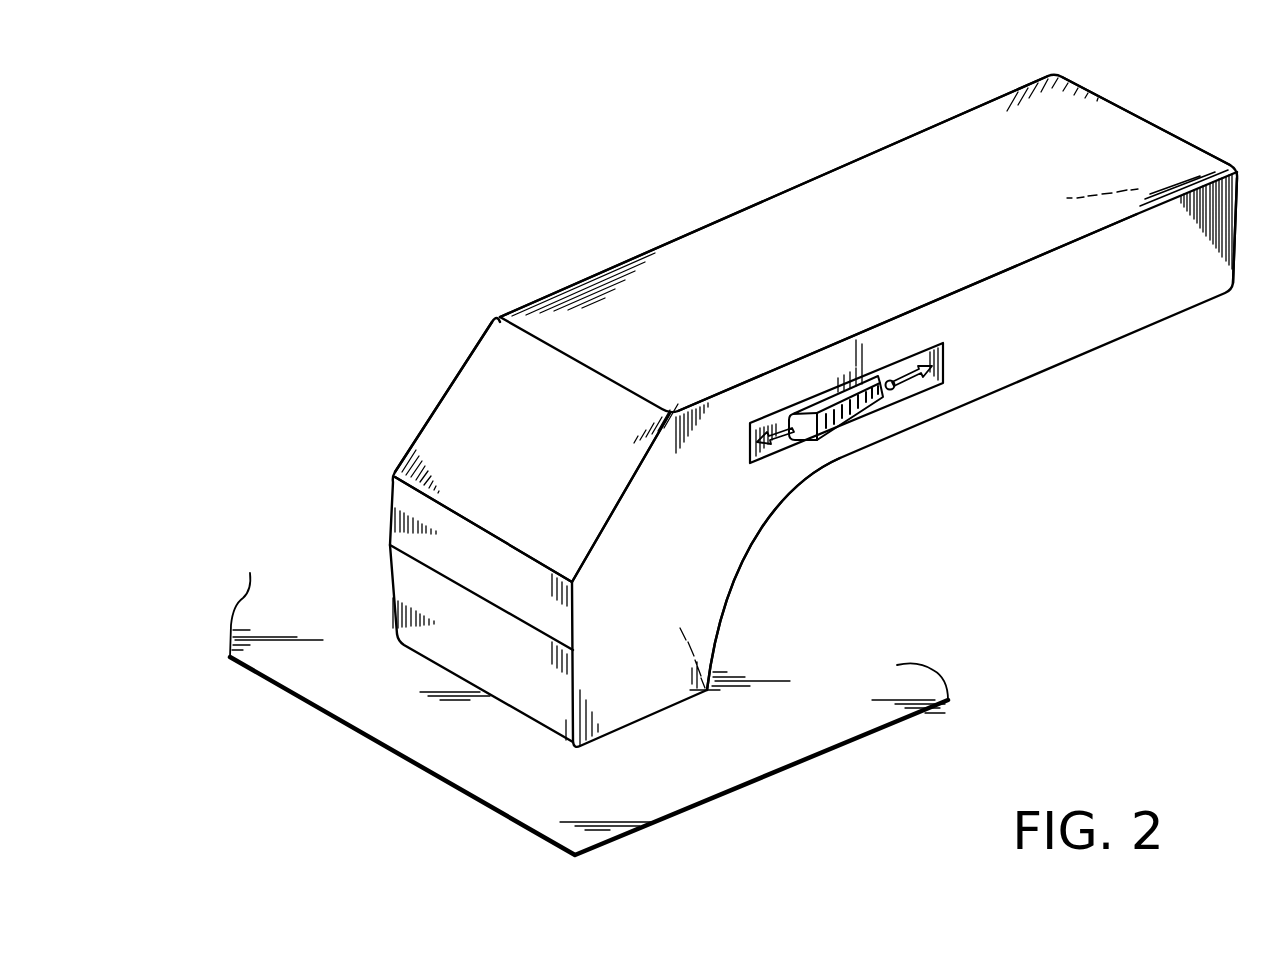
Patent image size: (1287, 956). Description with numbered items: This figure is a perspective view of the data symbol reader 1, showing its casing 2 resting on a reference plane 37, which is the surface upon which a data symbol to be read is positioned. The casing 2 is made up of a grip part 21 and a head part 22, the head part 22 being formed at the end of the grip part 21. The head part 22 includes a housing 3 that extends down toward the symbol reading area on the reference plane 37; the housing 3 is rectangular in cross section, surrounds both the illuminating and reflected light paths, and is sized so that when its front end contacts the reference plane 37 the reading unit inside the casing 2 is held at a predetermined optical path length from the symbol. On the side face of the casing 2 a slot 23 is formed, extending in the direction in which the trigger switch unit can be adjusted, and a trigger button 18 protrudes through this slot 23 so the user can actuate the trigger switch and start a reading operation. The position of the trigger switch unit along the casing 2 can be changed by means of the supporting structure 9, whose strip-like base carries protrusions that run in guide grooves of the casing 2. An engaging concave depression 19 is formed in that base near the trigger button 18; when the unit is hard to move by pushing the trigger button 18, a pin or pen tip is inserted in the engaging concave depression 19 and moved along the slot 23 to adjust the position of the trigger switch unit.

The data symbol reader 1 is at (641, 210).
The casing 2 is at (858, 188).
The housing 3 is at (707, 603).
The supporting structure 9 is at (892, 416).
The trigger button 18 is at (838, 418).
The engaging concave depression 19 is at (888, 380).
The grip part 21 is at (1097, 137).
The head part 22 is at (457, 433).
The slot 23 is at (918, 395).
The reference plane 37 is at (818, 738).